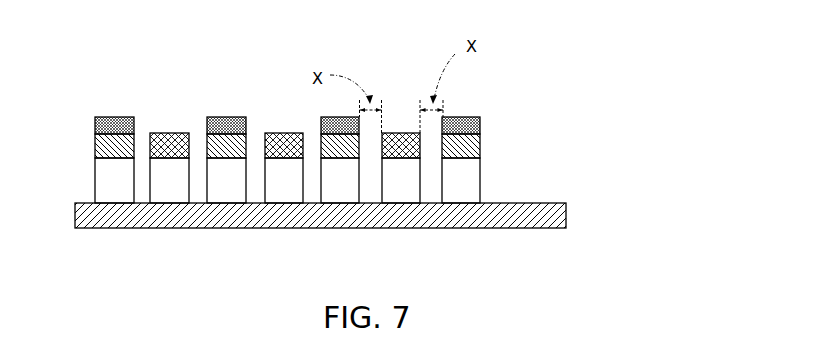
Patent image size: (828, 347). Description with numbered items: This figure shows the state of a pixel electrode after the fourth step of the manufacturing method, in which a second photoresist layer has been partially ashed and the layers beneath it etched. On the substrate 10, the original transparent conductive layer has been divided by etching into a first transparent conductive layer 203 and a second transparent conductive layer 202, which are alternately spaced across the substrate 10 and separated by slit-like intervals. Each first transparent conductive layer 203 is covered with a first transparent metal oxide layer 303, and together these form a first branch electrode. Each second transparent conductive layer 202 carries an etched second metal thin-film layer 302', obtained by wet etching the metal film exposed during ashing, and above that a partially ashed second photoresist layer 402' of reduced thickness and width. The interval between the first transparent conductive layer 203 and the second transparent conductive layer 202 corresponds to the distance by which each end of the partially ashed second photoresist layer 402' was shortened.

The substrate 10 is at (570, 217).
The second transparent conductive layer 202 is at (478, 186).
The first transparent conductive layer 203 is at (287, 186).
The etched second metal thin-film layer 302' is at (342, 132).
The first transparent metal oxide layer 303 is at (393, 133).
The partially ashed second photoresist layer 402' is at (328, 103).